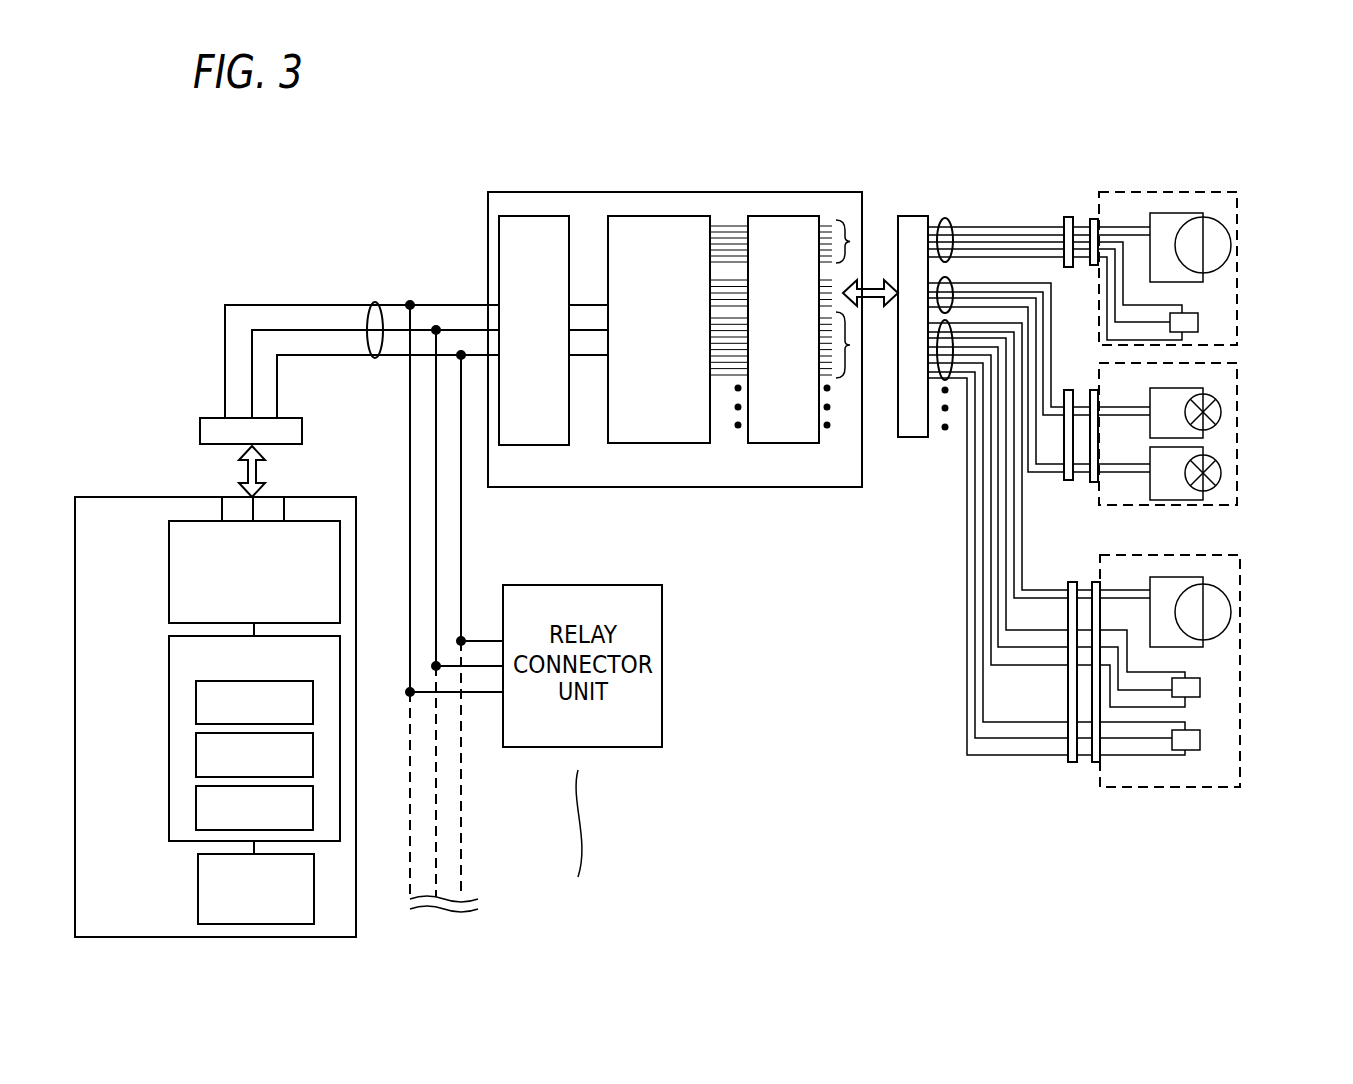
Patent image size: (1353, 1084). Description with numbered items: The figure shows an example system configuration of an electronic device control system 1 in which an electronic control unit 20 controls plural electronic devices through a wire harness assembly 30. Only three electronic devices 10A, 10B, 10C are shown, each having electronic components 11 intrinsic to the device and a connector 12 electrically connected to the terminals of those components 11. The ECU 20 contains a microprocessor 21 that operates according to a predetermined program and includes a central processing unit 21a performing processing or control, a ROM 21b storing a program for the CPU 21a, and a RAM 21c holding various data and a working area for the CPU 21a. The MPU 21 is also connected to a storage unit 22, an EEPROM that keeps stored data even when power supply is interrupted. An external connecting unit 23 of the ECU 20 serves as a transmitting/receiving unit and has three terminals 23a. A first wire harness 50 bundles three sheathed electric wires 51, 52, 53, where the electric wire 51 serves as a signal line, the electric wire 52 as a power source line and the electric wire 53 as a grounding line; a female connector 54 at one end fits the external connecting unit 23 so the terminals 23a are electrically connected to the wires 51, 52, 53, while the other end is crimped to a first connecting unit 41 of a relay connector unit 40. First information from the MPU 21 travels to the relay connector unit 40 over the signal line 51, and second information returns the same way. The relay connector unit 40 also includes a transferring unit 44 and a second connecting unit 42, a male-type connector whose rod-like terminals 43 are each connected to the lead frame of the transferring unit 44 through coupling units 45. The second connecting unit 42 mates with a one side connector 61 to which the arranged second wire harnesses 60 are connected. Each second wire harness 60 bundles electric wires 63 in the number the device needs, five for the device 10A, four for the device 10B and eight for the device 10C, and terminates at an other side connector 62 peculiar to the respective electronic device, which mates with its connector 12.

The electronic device control system 1 is at (355, 224).
The electronic device 10A is at (1242, 191).
The electronic device 10B is at (1242, 365).
The electronic device 10C is at (1242, 554).
The electronic components 11 is at (1198, 322).
The connector 12 is at (1090, 267).
The electronic control unit 20 is at (135, 497).
The microprocessor 21 is at (169, 658).
The central processing unit 21a is at (196, 703).
The ROM 21b is at (196, 753).
The RAM 21c is at (196, 806).
The storage unit 22 is at (198, 890).
The external connecting unit 23 is at (169, 572).
The terminals 23a is at (284, 513).
The wire harness assembly 30 is at (972, 143).
The relay connector unit 40 is at (838, 192).
The first connecting unit 41 is at (499, 245).
The second connecting unit 42 is at (795, 216).
The terminals 43 is at (850, 242).
The transferring unit 44 is at (652, 216).
The coupling units 45 is at (730, 214).
The first wire harness 50 is at (373, 302).
The electric wire 51 is at (235, 303).
The electric wire 52 is at (285, 320).
The electric wire 53 is at (330, 320).
The connector 54 is at (200, 420).
The second wire harnesses 60 is at (945, 318).
The one side connector 61 is at (923, 437).
The other side connectors 62 is at (1069, 217).
The electric wires 63 is at (1005, 228).